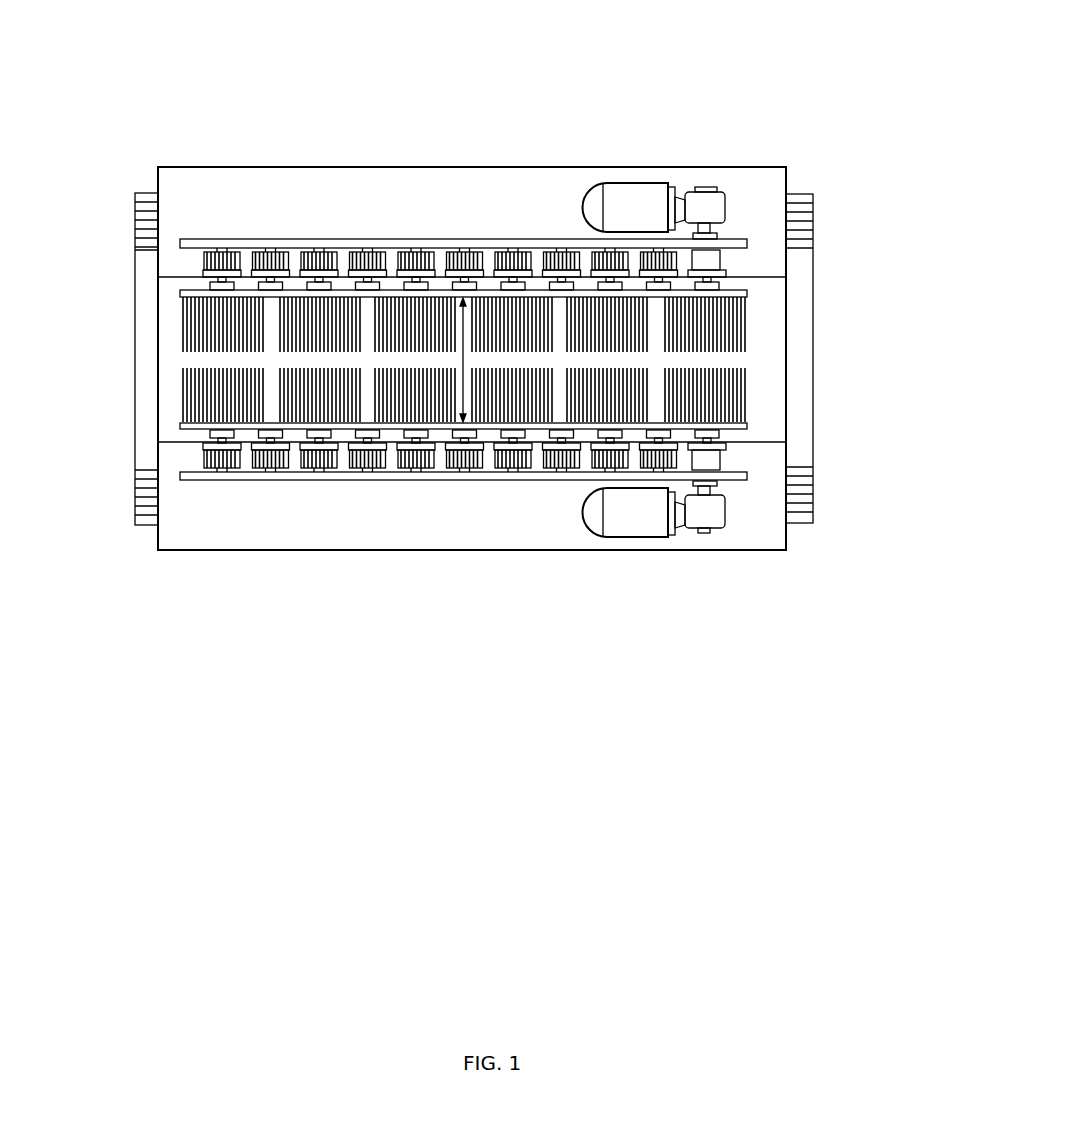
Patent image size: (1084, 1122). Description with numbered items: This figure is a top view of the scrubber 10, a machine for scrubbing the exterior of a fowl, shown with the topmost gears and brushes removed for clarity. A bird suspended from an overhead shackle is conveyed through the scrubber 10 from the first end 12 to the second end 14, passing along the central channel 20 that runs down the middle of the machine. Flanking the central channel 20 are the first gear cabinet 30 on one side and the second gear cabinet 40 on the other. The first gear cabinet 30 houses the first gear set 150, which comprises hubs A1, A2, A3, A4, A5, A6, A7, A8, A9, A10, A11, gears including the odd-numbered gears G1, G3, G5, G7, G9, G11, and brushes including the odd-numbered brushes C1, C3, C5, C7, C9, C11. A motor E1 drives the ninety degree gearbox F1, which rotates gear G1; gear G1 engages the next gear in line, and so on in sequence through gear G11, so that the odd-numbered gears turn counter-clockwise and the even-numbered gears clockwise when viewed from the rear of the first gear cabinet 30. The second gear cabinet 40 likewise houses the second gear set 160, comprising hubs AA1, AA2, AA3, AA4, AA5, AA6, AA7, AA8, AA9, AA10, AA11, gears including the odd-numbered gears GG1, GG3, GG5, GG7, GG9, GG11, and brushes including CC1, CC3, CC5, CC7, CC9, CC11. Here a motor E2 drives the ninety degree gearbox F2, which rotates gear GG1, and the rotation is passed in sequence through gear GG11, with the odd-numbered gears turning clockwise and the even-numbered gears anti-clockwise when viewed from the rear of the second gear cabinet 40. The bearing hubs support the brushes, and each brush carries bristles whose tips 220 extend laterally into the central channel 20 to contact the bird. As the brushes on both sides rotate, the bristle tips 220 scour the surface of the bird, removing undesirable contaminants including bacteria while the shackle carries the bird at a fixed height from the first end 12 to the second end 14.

The scrubber 10 is at (727, 800).
The first end 12 is at (158, 548).
The second end 14 is at (790, 538).
The central channel 20 is at (470, 430).
The tip 220 is at (197, 367).
The first gear cabinet 30 is at (767, 515).
The second gear cabinet 40 is at (750, 198).
The first gear set 150 is at (745, 478).
The second gear set 160 is at (748, 240).
The motor E1 is at (628, 520).
The motor E2 is at (625, 203).
The ninety degree gearbox F1 is at (700, 512).
The ninety degree gearbox F2 is at (715, 208).
The hub A1 is at (713, 462).
The hub A2 is at (655, 468).
The hub A3 is at (608, 468).
The hub A4 is at (560, 468).
The hub A5 is at (513, 468).
The hub A6 is at (455, 468).
The hub A7 is at (410, 468).
The hub A8 is at (360, 468).
The hub A9 is at (310, 468).
The hub A10 is at (268, 462).
The hub A11 is at (213, 460).
The hub AA1 is at (700, 250).
The hub AA2 is at (648, 252).
The hub AA3 is at (605, 252).
The hub AA4 is at (555, 252).
The hub AA5 is at (508, 252).
The hub AA6 is at (458, 252).
The hub AA7 is at (368, 252).
The hub AA8 is at (320, 252).
The hub AA9 is at (265, 252).
The hub AA10 is at (232, 250).
The hub AA11 is at (222, 252).
The individual gear G1 is at (717, 437).
The individual gear G3 is at (585, 440).
The individual gear G5 is at (525, 425).
The individual gear G7 is at (397, 437).
The individual gear G9 is at (330, 437).
The individual gear G11 is at (225, 437).
The individual gear GG1 is at (735, 243).
The individual gear GG3 is at (626, 282).
The individual gear GG5 is at (500, 283).
The individual gear GG7 is at (368, 283).
The individual gear GG9 is at (320, 283).
The individual gear GG11 is at (215, 283).
The brush C1 is at (725, 403).
The brush C3 is at (610, 400).
The brush C5 is at (500, 400).
The brush C7 is at (420, 400).
The brush C9 is at (330, 390).
The brush C11 is at (190, 395).
The brush CC1 is at (708, 320).
The brush CC3 is at (590, 307).
The brush CC5 is at (515, 318).
The brush CC7 is at (425, 318).
The brush CC9 is at (298, 317).
The brush CC11 is at (200, 317).